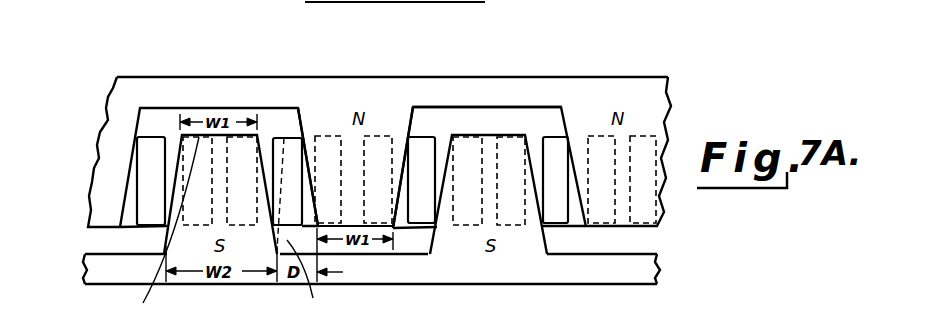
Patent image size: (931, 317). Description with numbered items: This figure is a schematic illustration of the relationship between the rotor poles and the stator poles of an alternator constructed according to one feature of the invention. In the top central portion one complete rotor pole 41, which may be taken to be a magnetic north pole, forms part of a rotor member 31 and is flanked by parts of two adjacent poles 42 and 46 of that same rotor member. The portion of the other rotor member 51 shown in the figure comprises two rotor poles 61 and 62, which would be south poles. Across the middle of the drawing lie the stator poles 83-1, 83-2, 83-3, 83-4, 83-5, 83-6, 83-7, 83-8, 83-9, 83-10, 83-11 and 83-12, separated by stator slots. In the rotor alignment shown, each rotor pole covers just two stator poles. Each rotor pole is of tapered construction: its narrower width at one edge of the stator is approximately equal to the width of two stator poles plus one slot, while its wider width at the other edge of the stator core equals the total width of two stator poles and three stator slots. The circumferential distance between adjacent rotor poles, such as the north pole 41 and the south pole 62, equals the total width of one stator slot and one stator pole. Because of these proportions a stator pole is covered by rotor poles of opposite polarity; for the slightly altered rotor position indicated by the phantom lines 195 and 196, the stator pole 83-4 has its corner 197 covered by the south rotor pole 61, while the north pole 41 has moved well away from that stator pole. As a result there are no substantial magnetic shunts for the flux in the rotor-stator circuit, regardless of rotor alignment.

The rotor member 31 is at (527, 87).
The rotor pole 41 is at (363, 100).
The adjacent rotor pole 42 is at (628, 228).
The adjacent rotor pole 46 is at (110, 177).
The rotor member 51 is at (662, 271).
The rotor pole 61 is at (252, 237).
The rotor pole 62 is at (518, 245).
The phantom line 195 is at (228, 226).
The phantom line 196 is at (318, 110).
The corner 197 is at (291, 286).
The stator pole 83-1 is at (143, 214).
The stator pole 83-2 is at (182, 250).
The stator pole 83-3 is at (266, 205).
The stator pole 83-4 is at (283, 138).
The stator pole 83-5 is at (331, 136).
The stator pole 83-6 is at (378, 135).
The stator pole 83-7 is at (425, 217).
The stator pole 83-8 is at (480, 135).
The stator pole 83-9 is at (522, 135).
The stator pole 83-10 is at (558, 222).
The stator pole 83-11 is at (620, 137).
The stator pole 83-12 is at (647, 197).